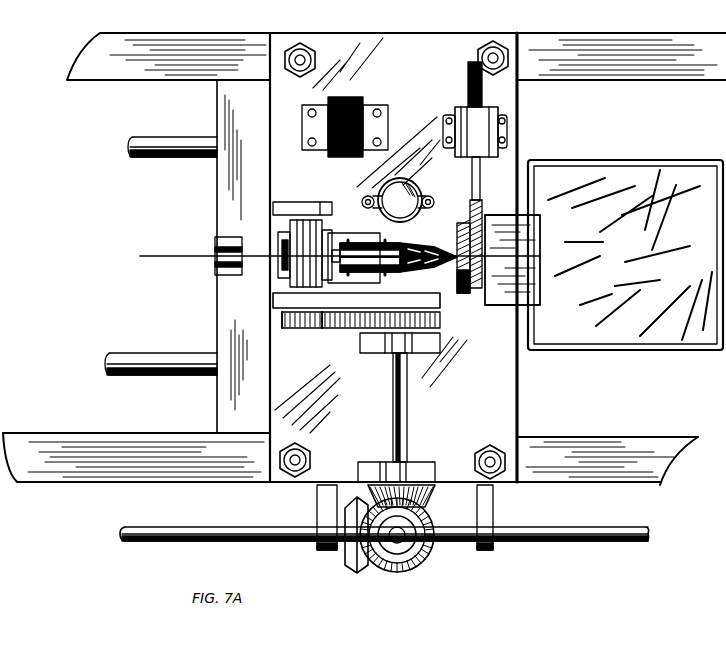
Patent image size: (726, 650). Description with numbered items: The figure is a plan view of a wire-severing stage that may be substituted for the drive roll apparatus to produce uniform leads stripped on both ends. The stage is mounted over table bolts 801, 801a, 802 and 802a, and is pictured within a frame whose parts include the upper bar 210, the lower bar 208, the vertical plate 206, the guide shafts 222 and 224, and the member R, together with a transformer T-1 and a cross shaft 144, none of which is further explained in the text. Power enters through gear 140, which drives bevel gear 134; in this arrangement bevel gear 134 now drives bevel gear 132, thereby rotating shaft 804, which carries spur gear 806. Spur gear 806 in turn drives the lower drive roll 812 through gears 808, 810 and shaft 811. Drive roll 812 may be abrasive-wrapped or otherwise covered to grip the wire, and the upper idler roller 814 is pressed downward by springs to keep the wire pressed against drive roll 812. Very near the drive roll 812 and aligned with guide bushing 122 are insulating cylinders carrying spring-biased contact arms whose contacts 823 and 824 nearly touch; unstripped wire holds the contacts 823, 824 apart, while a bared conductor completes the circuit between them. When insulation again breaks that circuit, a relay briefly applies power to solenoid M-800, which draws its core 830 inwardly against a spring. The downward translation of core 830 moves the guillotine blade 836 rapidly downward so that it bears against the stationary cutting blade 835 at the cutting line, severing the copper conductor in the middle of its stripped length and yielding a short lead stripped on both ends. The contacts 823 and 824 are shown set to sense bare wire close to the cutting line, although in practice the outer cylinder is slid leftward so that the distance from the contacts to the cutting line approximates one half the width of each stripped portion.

The upper frame bar 210 is at (137, 60).
The lower frame bar 208 is at (78, 465).
The vertical frame plate 206 is at (258, 355).
The upper guide shaft 222 is at (188, 137).
The lower guide shaft 224 is at (195, 370).
The guide bushing 122 is at (215, 247).
The lower drive roll 812 is at (280, 273).
The shaft 811 is at (313, 202).
The upper idler roller 814 is at (325, 230).
The contact 823 is at (457, 255).
The contact 824 is at (462, 266).
The stationary cutting blade 835 is at (463, 223).
The guillotine blade 836 is at (477, 214).
The solenoid M-800 is at (455, 109).
The core 830 is at (485, 90).
The transformer T-1 is at (350, 97).
The bolt 801a is at (302, 55).
The bolt 802a is at (494, 53).
The bolt 801 is at (290, 476).
The bolt 802 is at (495, 478).
The spur gear 806 is at (440, 320).
The gear 810 is at (287, 328).
The gear 808 is at (325, 328).
The shaft 804 is at (408, 412).
The bevel gear 132 is at (434, 498).
The bevel gear 134 is at (422, 557).
The gear 140 is at (356, 572).
The cross shaft 144 is at (578, 541).
The frame member R is at (626, 273).